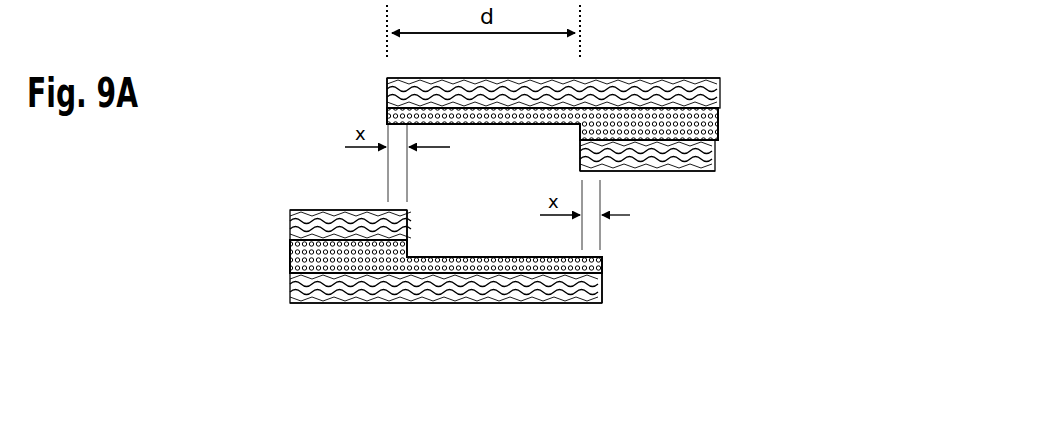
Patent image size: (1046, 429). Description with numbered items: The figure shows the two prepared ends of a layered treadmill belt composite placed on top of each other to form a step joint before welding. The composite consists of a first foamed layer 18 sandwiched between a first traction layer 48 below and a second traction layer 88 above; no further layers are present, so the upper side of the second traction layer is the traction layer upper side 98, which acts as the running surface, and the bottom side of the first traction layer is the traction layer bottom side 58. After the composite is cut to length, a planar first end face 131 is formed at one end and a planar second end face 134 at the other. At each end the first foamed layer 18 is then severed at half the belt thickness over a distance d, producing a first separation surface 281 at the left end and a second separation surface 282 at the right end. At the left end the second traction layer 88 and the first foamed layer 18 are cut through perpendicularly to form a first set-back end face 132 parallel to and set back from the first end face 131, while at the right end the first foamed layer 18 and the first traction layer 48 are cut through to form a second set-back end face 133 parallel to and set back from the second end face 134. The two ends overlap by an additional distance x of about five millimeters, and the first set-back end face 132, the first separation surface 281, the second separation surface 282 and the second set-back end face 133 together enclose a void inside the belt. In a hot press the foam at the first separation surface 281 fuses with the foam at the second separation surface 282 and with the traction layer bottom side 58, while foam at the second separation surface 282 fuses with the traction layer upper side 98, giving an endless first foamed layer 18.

The second traction layer 88 is at (722, 95).
The first foamed layer 18 is at (721, 127).
The first traction layer 48 is at (718, 168).
The traction layer upper side 98 is at (681, 76).
The traction layer bottom side 58 is at (676, 174).
The second end face 134 is at (385, 92).
The second set-back end face 133 is at (578, 148).
The first set-back end face 132 is at (410, 233).
The first end face 131 is at (605, 270).
The second separation surface 282 is at (468, 127).
The first separation surface 281 is at (492, 255).